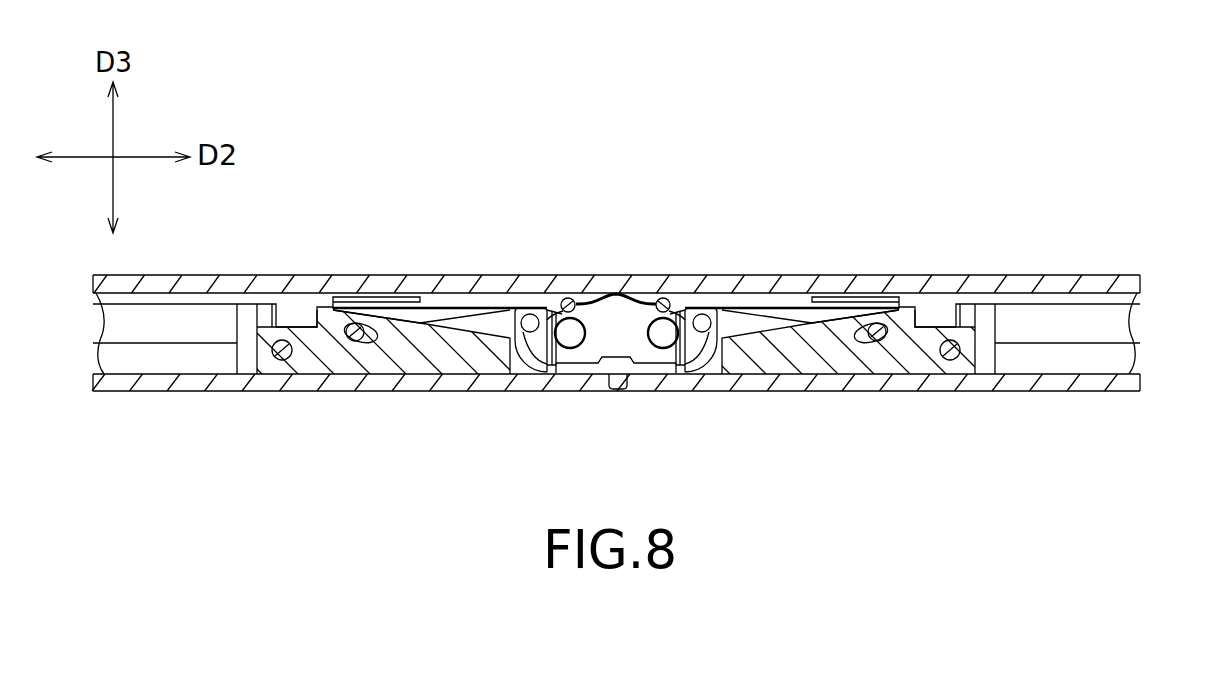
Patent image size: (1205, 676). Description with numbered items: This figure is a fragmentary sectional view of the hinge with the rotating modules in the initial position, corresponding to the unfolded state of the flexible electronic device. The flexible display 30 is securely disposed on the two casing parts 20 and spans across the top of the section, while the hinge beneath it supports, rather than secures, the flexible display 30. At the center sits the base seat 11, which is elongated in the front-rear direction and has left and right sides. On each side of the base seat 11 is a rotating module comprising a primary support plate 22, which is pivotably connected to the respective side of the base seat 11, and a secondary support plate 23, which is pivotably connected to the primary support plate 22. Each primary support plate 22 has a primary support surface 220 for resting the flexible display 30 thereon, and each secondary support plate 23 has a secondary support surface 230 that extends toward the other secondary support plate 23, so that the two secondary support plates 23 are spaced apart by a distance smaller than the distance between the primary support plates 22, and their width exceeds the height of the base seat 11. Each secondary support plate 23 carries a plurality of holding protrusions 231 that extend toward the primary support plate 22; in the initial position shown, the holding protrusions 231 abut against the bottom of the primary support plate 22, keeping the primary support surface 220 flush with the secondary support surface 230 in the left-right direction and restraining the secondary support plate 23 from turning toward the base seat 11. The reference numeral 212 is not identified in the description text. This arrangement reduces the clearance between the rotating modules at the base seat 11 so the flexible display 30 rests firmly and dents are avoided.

The base seat 11 is at (612, 362).
The casing parts 20 is at (309, 392).
The primary support plate 22 is at (480, 303).
The secondary support plate 23 is at (637, 290).
The flexible display 30 is at (527, 292).
The support block 212 is at (410, 345).
The primary support surface 220 is at (430, 292).
The secondary support surface 230 is at (570, 297).
The holding protrusions 231 is at (553, 366).